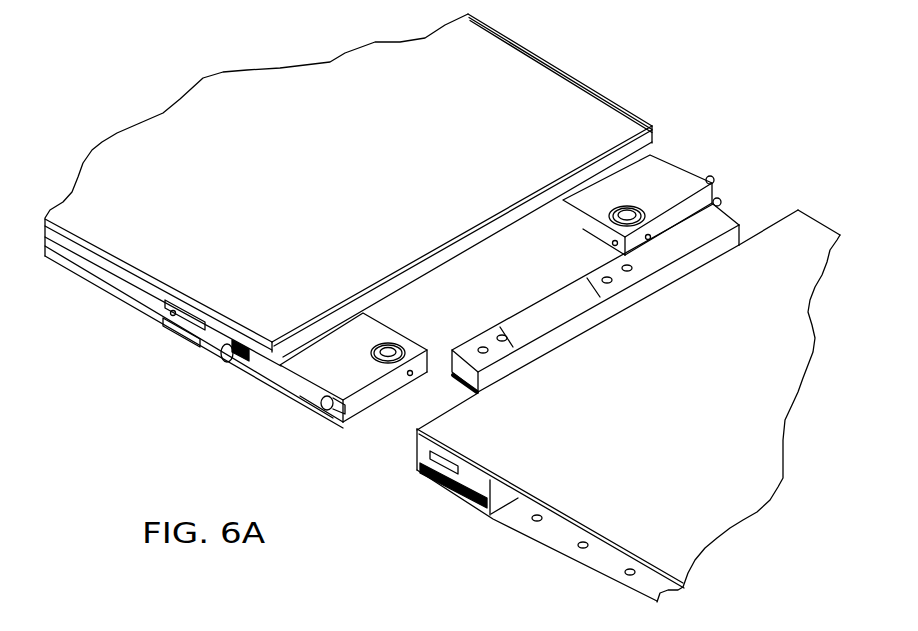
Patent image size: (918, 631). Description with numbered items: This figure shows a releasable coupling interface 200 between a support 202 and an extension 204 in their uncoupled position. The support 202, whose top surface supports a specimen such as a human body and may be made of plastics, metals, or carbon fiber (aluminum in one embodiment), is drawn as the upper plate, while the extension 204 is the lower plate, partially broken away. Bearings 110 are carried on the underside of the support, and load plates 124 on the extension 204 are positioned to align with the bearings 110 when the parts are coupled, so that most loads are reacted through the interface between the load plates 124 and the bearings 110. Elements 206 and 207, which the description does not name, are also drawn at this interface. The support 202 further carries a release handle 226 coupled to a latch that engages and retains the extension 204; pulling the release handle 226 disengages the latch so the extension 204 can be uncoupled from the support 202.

The releasable coupling interface 200 is at (766, 154).
The support 202 is at (595, 117).
The extension 204 is at (728, 515).
The hinge block 206 is at (687, 171).
The bearings 110 is at (622, 205).
The hinge bar 207 is at (470, 376).
The load plates 124 is at (648, 280).
The release handle 226 is at (228, 357).